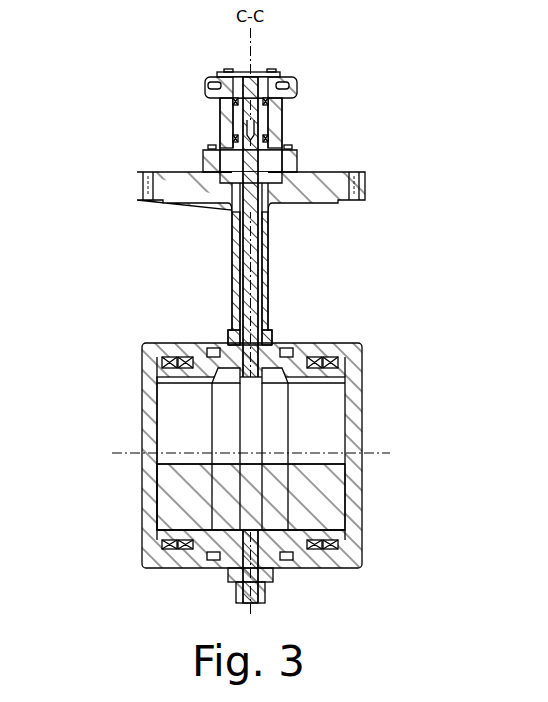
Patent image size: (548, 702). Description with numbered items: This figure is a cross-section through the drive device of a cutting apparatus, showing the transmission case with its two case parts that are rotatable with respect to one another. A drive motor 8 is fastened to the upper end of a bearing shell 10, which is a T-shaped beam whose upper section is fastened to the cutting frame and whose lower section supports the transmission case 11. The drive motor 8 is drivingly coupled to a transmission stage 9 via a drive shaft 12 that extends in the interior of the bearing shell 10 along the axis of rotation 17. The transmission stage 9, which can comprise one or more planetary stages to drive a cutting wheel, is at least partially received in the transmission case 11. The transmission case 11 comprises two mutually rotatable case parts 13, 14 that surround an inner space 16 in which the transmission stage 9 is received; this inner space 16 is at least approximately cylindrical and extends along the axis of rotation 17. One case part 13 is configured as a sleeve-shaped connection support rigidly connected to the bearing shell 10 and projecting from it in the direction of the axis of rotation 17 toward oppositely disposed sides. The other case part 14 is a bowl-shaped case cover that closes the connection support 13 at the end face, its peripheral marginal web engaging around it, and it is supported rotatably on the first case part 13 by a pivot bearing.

The drive motor 8 is at (284, 120).
The transmission stage 9 is at (320, 427).
The bearing shell 10 is at (232, 267).
The transmission case 11 is at (353, 342).
The drive shaft 12 is at (253, 248).
The case part 13 is at (180, 378).
The case part 14 is at (147, 393).
The inner space 16 is at (165, 437).
The axis of rotation 17 is at (380, 456).